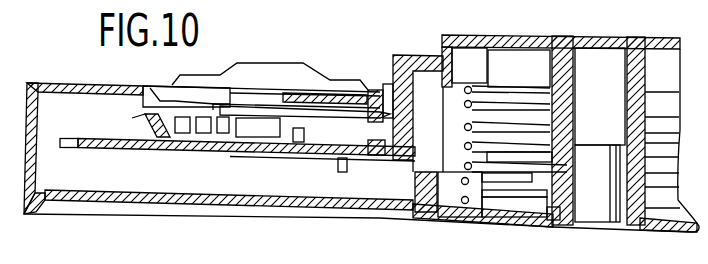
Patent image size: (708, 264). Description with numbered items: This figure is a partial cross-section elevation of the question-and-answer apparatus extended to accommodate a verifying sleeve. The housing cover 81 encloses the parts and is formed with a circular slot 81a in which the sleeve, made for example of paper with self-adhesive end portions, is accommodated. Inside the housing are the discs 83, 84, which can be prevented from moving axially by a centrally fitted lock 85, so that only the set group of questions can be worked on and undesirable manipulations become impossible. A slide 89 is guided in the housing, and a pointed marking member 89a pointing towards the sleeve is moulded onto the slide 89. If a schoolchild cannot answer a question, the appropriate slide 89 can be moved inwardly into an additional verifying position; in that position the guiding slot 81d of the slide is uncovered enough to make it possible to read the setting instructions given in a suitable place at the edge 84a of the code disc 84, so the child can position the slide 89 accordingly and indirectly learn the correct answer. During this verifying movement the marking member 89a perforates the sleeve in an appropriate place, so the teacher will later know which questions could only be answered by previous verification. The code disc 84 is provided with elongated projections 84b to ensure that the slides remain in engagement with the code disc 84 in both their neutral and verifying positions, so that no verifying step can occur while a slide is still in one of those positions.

The housing cover 81 is at (36, 88).
The circular slot 81a is at (374, 141).
The guiding slot 81d is at (162, 68).
The disc 83 is at (321, 151).
The code disc 84 is at (180, 140).
The edge of the code disc 84a is at (132, 117).
The elongated projections 84b is at (256, 131).
The lock 85 is at (592, 157).
The slide 89 is at (270, 68).
The pointed marking member 89a is at (336, 110).